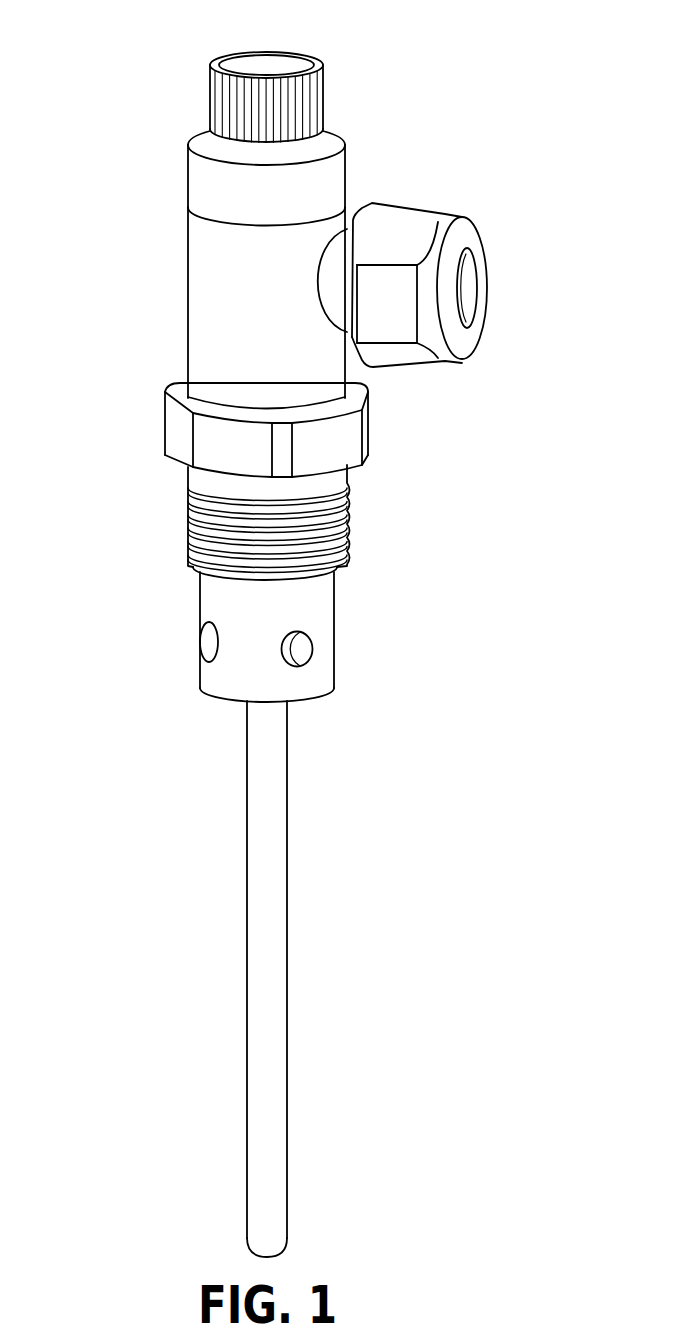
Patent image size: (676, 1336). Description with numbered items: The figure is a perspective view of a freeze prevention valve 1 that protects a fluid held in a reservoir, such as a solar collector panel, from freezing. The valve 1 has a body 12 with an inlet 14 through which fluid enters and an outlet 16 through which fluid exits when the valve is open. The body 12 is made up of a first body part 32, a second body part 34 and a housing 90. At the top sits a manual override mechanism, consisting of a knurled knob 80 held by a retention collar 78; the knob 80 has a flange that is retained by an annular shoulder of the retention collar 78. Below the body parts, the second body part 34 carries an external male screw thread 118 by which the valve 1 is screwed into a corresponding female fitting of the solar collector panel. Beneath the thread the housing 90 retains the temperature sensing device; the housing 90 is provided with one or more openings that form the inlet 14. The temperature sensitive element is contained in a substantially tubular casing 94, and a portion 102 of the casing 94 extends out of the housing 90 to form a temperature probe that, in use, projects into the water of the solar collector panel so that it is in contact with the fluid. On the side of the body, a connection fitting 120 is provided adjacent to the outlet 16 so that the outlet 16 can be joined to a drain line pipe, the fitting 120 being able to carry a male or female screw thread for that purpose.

The valve 1 is at (118, 106).
The body 12 is at (180, 264).
The inlet 14 is at (205, 642).
The outlet 16 is at (472, 292).
The first body part 32 is at (188, 310).
The second body part 34 is at (370, 432).
The retention collar 78 is at (188, 180).
The knob 80 is at (270, 58).
The housing 90 is at (334, 614).
The casing 94 is at (288, 890).
The portion of the casing 102 is at (312, 1100).
The screw thread 118 is at (348, 527).
The connection fitting 120 is at (405, 201).